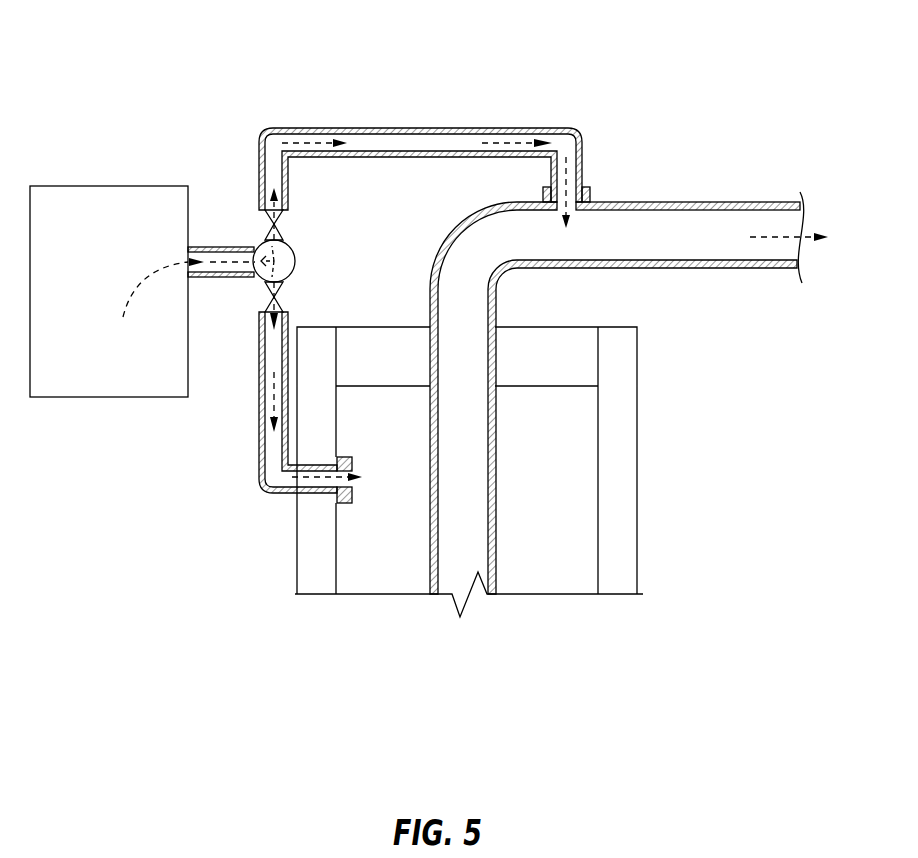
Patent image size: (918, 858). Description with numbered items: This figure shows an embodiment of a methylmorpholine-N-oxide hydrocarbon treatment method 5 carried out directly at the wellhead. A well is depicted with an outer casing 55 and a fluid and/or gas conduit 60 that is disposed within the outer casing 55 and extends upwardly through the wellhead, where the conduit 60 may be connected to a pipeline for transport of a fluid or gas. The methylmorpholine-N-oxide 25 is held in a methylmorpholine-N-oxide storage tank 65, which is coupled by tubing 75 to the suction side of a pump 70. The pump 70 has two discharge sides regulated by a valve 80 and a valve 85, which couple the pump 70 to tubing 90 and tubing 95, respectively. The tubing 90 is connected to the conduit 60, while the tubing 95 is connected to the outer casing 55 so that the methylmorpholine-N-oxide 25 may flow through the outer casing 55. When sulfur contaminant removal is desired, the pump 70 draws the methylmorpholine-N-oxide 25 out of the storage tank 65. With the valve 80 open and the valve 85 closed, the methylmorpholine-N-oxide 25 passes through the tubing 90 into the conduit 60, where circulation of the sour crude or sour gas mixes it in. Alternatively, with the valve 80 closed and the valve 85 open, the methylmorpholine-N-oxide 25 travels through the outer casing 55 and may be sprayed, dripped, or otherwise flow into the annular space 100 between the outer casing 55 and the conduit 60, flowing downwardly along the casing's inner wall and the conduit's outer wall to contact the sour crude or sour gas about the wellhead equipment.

The methylmorpholine-N-oxide hydrocarbon treatment method 5 is at (164, 60).
The methylmorpholine-N-oxide 25 is at (297, 143).
The outer casing 55 is at (295, 560).
The fluid and/or gas conduit 60 is at (663, 218).
The methylmorpholine-N-oxide storage tank 65 is at (95, 398).
The pump 70 is at (295, 258).
The tubing 75 is at (233, 246).
The valve 80 is at (283, 221).
The valve 85 is at (265, 283).
The tubing 90 is at (388, 128).
The tubing 95 is at (258, 442).
The annular space 100 is at (370, 562).